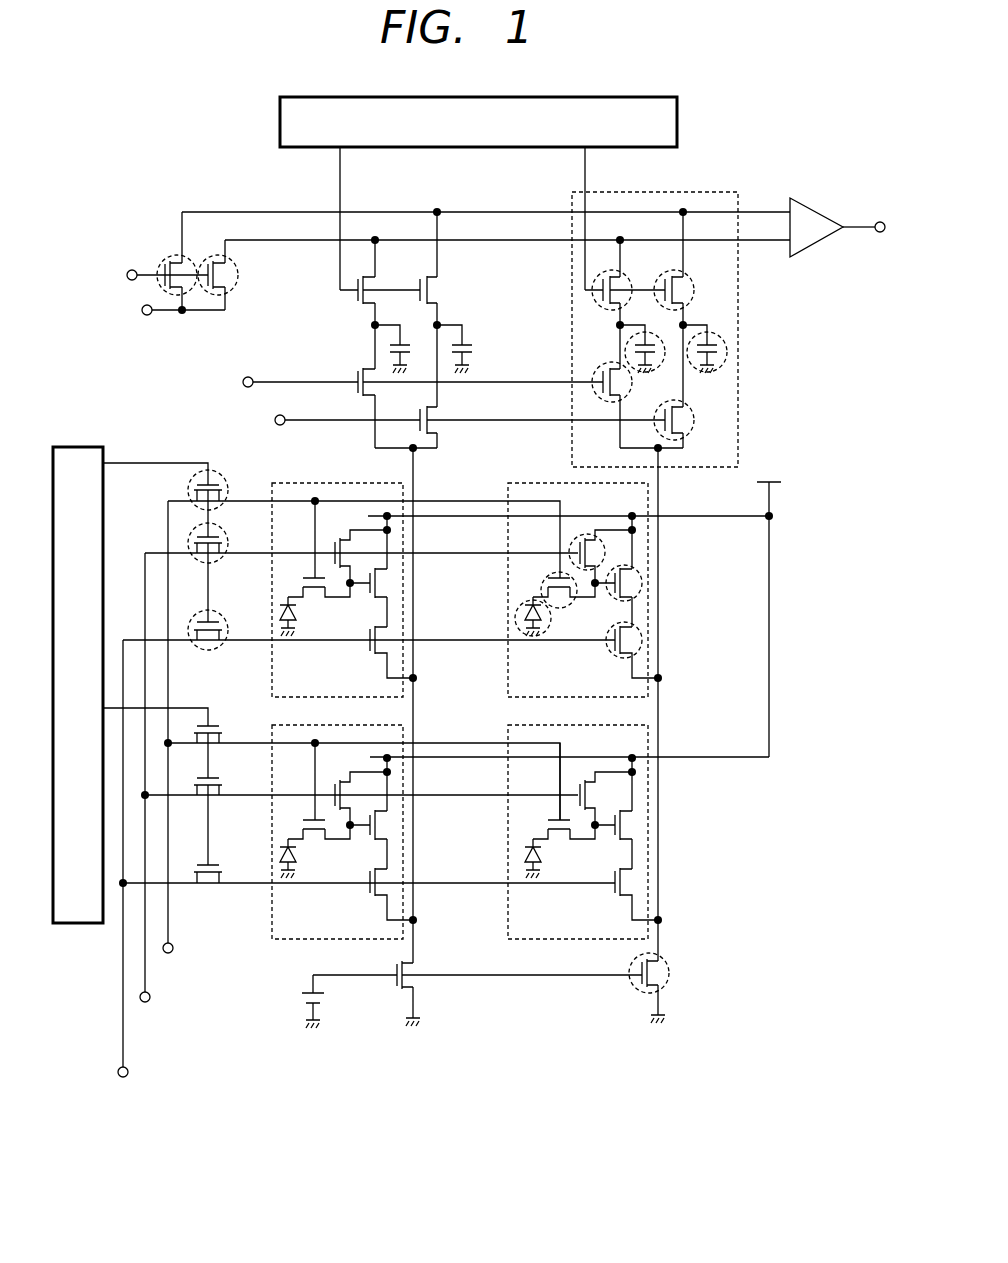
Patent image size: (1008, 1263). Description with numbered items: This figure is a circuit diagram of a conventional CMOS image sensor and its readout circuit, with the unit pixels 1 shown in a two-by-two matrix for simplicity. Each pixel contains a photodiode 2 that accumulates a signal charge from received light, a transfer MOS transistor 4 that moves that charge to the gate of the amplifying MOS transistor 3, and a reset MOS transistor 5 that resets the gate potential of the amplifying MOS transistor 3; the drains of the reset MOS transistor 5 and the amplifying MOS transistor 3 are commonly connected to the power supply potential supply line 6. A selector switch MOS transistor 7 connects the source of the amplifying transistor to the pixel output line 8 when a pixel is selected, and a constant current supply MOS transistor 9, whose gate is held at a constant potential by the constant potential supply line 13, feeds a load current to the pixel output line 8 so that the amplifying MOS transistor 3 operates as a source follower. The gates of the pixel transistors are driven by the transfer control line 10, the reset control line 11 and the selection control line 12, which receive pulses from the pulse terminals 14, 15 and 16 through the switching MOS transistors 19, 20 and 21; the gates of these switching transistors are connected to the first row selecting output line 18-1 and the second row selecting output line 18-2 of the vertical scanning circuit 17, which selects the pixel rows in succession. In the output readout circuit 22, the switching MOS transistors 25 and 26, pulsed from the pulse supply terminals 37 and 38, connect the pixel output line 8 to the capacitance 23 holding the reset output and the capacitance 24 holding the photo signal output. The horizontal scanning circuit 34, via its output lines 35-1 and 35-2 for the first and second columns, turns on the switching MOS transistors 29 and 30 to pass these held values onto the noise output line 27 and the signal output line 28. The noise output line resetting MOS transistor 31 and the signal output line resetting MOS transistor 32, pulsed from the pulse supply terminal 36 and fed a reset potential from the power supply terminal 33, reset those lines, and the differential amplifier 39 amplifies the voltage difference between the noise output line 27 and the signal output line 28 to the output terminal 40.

The unit pixel 1 is at (317, 482).
The photodiode 2 is at (515, 611).
The amplifying MOS transistor 3 is at (642, 584).
The transfer MOS transistor 4 is at (540, 579).
The reset MOS transistor 5 is at (581, 533).
The power supply potential supply line 6 is at (770, 583).
The selector switch MOS transistor 7 is at (642, 640).
The pixel output line 8 is at (660, 835).
The constant current supply MOS transistor 9 is at (670, 972).
The transfer control line 10 is at (462, 500).
The reset control line 11 is at (462, 552).
The selection control line 12 is at (448, 638).
The constant potential supply line 13 is at (490, 977).
The pulse terminal 14 is at (172, 953).
The pulse terminal 15 is at (149, 1002).
The pulse terminal 16 is at (127, 1077).
The vertical scanning circuit 17 is at (80, 445).
The first row selecting output line 18-1 is at (148, 462).
The second row selecting output line 18-2 is at (198, 707).
The switching MOS transistor 19 is at (226, 480).
The switching MOS transistor 20 is at (226, 533).
The switching MOS transistor 21 is at (226, 618).
The output readout circuit 22 is at (740, 362).
The capacitance 23 is at (625, 344).
The capacitance 24 is at (722, 348).
The switching MOS transistor 25 is at (595, 370).
The switching MOS transistor 26 is at (694, 422).
The noise output line 27 is at (770, 244).
The signal output line 28 is at (770, 208).
The switching MOS transistor 29 is at (592, 292).
The switching MOS transistor 30 is at (694, 292).
The noise output line resetting MOS transistor 31 is at (238, 278).
The signal output line resetting MOS transistor 32 is at (168, 258).
The power supply terminal 33 is at (142, 311).
The horizontal scanning circuit 34 is at (677, 116).
The output line 35-1 is at (340, 176).
The output line 35-2 is at (585, 176).
The pulse supply terminal 36 is at (127, 276).
The pulse supply terminal 37 is at (243, 383).
The pulse supply terminal 38 is at (275, 421).
The differential amplifier 39 is at (812, 205).
The output terminal 40 is at (880, 233).